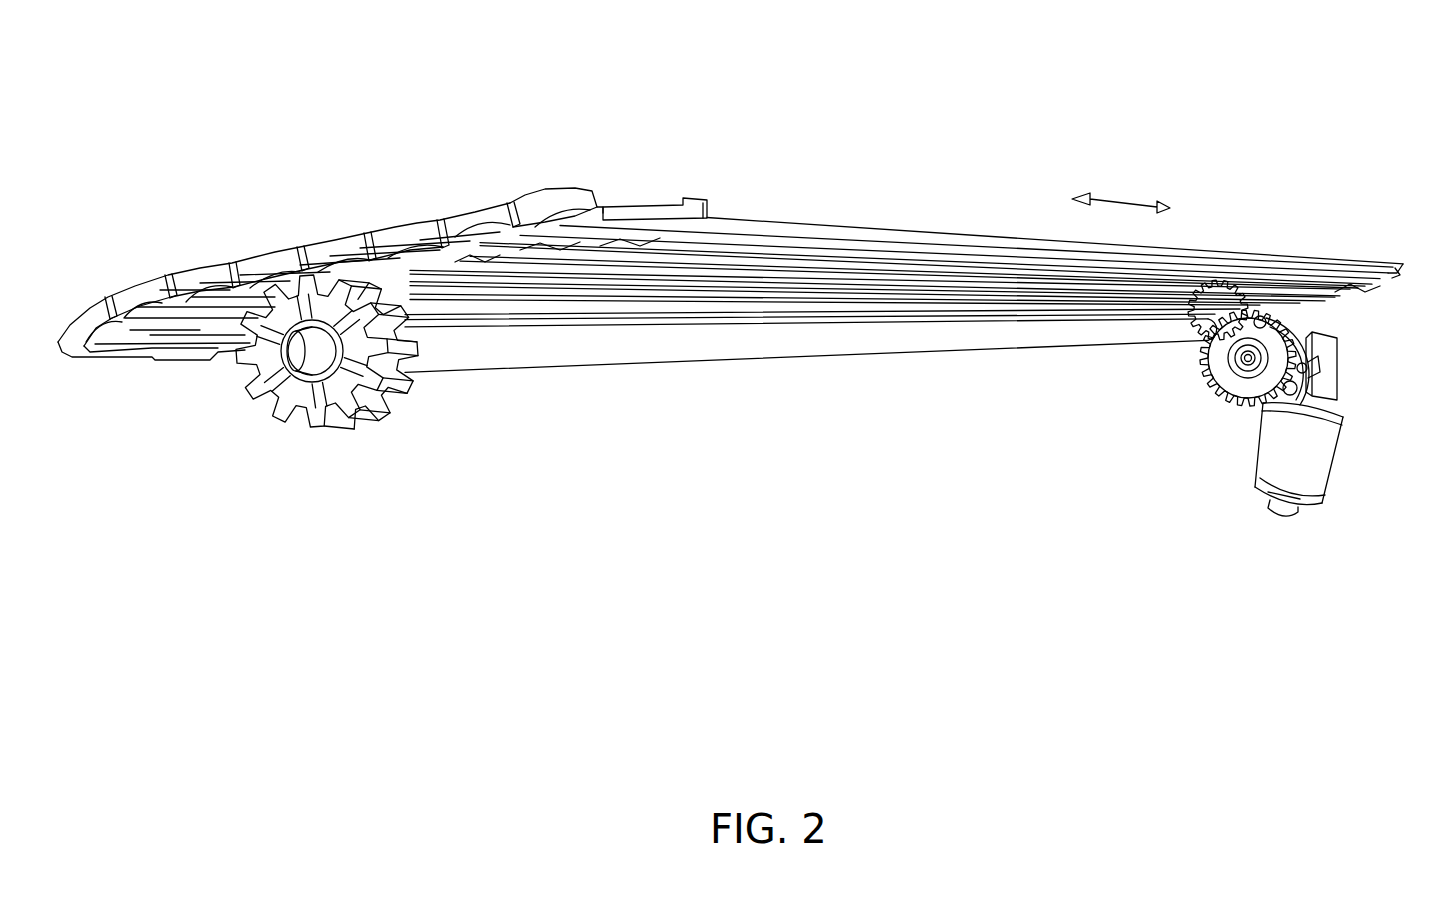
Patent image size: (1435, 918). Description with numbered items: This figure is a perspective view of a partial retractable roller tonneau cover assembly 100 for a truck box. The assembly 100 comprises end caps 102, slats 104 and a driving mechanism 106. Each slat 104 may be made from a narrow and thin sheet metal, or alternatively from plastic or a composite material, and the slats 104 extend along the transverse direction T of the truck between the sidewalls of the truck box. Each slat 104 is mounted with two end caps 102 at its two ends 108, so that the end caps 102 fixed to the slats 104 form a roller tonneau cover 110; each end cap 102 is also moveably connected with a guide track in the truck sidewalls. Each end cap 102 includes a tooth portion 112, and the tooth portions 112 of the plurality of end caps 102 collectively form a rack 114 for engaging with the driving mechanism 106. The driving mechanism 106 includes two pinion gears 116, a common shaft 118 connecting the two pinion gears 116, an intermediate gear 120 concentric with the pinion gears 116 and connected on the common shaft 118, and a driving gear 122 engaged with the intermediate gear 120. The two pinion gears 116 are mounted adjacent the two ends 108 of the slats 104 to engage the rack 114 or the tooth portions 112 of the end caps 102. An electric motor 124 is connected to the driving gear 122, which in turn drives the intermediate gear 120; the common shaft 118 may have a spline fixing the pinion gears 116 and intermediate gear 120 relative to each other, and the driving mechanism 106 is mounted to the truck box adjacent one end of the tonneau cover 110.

The roller tonneau cover assembly 100 is at (1267, 66).
The end cap 102 is at (557, 206).
The slat 104 is at (962, 246).
The driving mechanism 106 is at (930, 356).
The end 108 is at (470, 208).
The roller tonneau cover 110 is at (1203, 253).
The tooth portion 112 is at (641, 250).
The rack 114 is at (482, 256).
The pinion gear 116 is at (357, 417).
The common shaft 118 is at (836, 346).
The intermediate gear 120 is at (1193, 348).
The driving gear 122 is at (1222, 378).
The electric motor 124 is at (1308, 460).